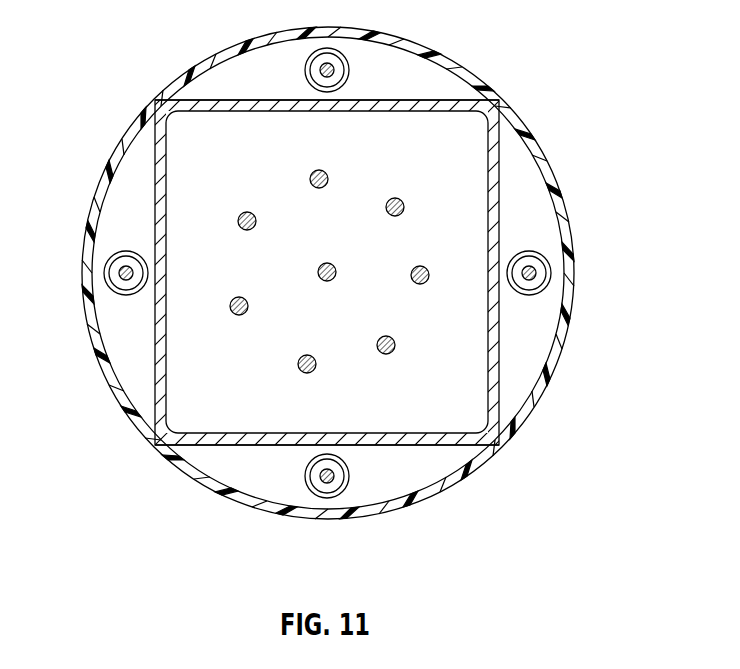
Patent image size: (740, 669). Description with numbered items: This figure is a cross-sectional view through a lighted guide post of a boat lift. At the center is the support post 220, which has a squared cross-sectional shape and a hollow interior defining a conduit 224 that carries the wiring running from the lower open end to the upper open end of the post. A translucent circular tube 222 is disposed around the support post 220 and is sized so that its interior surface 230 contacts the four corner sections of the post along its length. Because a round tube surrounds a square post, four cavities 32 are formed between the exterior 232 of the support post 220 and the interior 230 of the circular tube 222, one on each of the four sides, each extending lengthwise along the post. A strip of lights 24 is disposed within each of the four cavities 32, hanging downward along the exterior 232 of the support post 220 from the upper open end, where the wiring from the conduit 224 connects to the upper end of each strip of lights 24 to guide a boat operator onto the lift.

The strip of lights 24 is at (312, 52).
The cavity 32 is at (392, 82).
The support post 220 is at (153, 170).
The circular tube 222 is at (193, 478).
The conduit 224 is at (243, 352).
The interior surface of the circular tube 230 is at (113, 187).
The exterior of the support post 232 is at (225, 100).